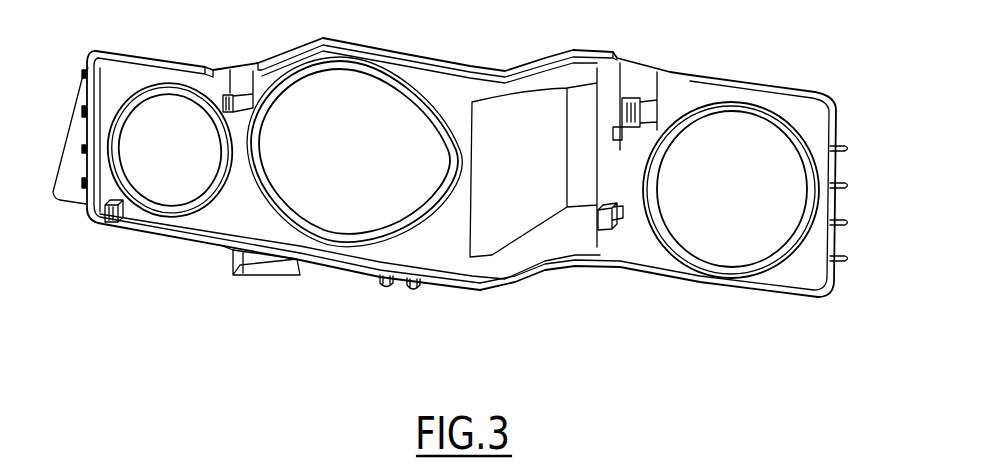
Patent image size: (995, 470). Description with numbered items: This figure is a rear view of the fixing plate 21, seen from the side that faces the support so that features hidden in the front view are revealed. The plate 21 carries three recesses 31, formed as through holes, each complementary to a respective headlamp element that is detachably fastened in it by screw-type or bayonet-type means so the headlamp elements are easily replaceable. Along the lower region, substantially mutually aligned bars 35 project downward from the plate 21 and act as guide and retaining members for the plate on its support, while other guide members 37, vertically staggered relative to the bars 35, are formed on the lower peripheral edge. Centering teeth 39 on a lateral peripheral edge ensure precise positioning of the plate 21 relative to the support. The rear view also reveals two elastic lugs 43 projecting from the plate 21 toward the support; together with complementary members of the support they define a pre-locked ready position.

The fixing plate 21 is at (824, 66).
The recesses 31 is at (458, 167).
The bars 35 is at (268, 276).
The guide members 37 is at (412, 293).
The centering teeth 39 is at (850, 262).
The elastic lugs 43 is at (109, 225).